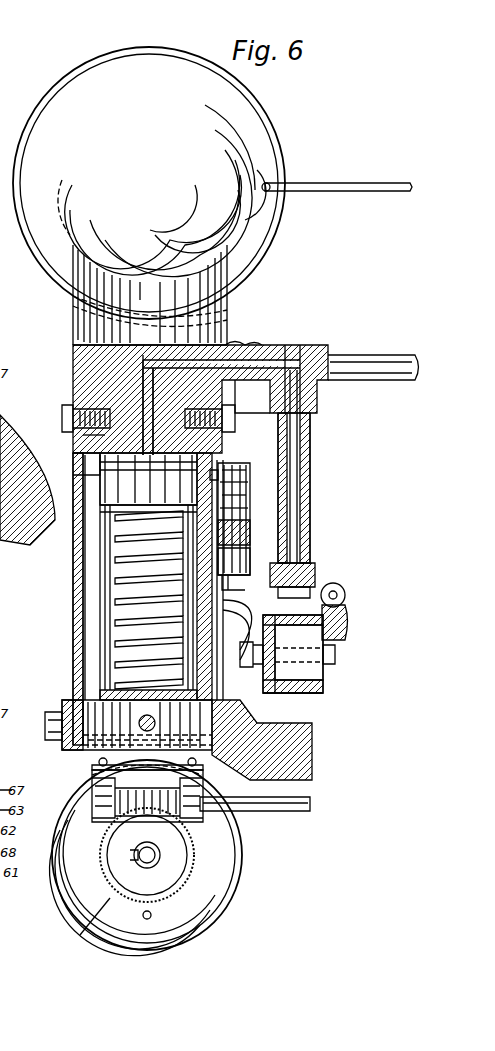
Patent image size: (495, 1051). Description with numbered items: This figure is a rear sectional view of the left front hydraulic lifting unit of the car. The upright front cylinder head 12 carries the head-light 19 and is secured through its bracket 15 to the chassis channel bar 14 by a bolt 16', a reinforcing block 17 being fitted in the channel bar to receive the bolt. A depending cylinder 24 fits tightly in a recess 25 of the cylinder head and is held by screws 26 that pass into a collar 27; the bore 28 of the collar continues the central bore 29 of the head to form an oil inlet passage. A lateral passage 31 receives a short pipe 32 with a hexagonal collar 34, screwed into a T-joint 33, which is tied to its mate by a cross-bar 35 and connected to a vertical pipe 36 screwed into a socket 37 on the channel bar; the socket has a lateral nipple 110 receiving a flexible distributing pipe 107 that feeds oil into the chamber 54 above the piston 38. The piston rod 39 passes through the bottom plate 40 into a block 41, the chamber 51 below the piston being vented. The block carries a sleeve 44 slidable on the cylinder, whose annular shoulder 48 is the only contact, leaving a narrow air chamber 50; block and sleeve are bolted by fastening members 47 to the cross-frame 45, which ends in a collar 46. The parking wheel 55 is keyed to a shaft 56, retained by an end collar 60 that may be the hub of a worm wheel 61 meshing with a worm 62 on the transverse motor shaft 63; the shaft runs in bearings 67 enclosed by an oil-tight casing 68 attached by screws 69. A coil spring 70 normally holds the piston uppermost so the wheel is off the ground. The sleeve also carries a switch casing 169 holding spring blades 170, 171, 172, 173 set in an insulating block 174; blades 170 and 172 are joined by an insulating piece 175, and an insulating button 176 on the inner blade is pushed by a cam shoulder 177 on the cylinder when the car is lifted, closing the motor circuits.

The front cylinder head 12 is at (215, 315).
The channel bar 14 is at (323, 690).
The bracket 15 is at (240, 640).
The bolt 16' is at (306, 654).
The reinforcing block 17 is at (312, 670).
The head-light 19 is at (102, 75).
The cylinder 24 is at (95, 601).
The recess 25 is at (85, 440).
The screws 26 is at (62, 416).
The collar 27 is at (105, 403).
The bore of collar 28 is at (143, 398).
The central bore 29 is at (147, 355).
The lateral passage 31 is at (225, 335).
The short pipe 32 is at (280, 345).
The T-joint 33 is at (292, 345).
The hexagonal collar 34 is at (270, 345).
The cross-bar 35 is at (380, 355).
The vertical pipe 36 is at (312, 437).
The socket 37 is at (316, 566).
The piston 38 is at (105, 495).
The piston rod 39 is at (125, 638).
The bottom plate 40 is at (90, 690).
The block 41 is at (95, 737).
The sleeve 44 is at (75, 562).
The frame 45 is at (312, 742).
The collar 46 is at (62, 700).
The bolts 47 is at (45, 717).
The annular shoulder 48 is at (80, 470).
The air chamber 50 is at (88, 657).
The chamber below piston 51 is at (108, 617).
The chamber above piston 54 is at (215, 455).
The parking wheel 55 is at (225, 880).
The rotary shaft 56 is at (160, 855).
The end collar 60 is at (27, 657).
The worm wheel 61 is at (180, 895).
The worm 62 is at (92, 790).
The transverse shaft 63 is at (280, 812).
The bearings 67 is at (203, 778).
The casing 68 is at (80, 935).
The screws 69 is at (99, 762).
The coil spring 70 is at (120, 512).
The distributing pipe 107 is at (346, 620).
The lateral nipple 110 is at (340, 588).
The switch casing 169 is at (300, 462).
The switch blade 170 is at (248, 485).
The switch contact 171 is at (248, 509).
The switch blade 172 is at (245, 475).
The switch contact 173 is at (250, 530).
The insulating block 174 is at (250, 552).
The insulating piece 175 is at (218, 472).
The insulating button 176 is at (248, 497).
The cam shoulder 177 is at (225, 630).